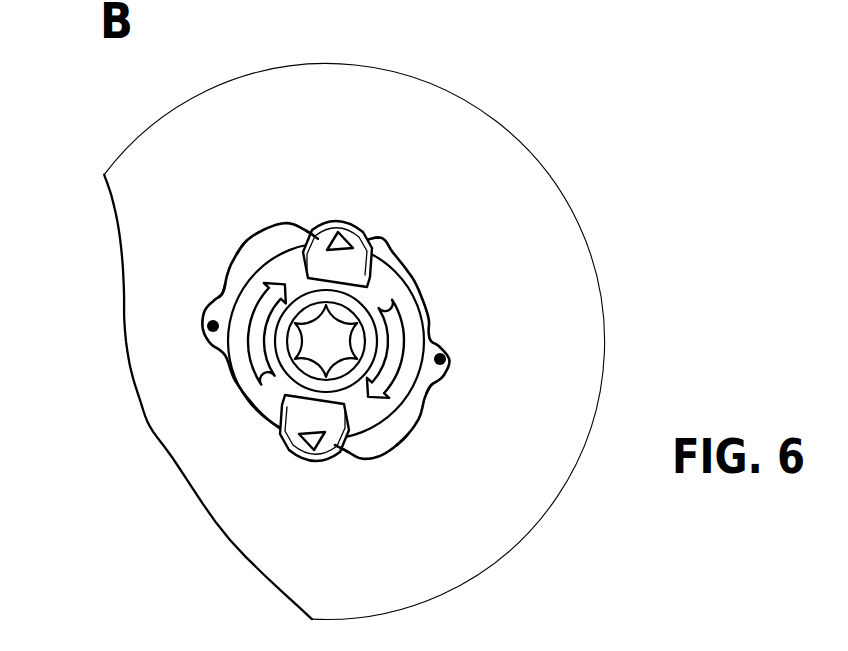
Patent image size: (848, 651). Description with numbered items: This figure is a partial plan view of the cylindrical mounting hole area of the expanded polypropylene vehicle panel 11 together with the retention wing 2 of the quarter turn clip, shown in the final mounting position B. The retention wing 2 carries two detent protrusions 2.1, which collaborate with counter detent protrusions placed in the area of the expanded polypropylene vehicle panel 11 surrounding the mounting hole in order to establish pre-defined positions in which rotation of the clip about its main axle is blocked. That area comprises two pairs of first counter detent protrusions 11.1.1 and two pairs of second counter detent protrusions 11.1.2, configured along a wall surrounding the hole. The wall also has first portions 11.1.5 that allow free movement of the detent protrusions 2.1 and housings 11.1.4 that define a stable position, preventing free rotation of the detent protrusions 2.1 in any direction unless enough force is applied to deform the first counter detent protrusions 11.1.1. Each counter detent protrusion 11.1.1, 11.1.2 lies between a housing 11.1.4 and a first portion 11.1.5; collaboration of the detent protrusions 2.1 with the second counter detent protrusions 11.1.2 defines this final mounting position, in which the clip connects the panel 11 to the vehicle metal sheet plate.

The expanded polypropylene vehicle panel 11 is at (530, 193).
The retention wing 2 is at (407, 270).
The detent protrusion 2.1 is at (361, 251).
The first counter detent protrusion 11.1.1 is at (227, 290).
The second counter detent protrusion 11.1.2 is at (308, 232).
The housing 11.1.4 is at (213, 326).
The first portion 11.1.5 is at (238, 248).